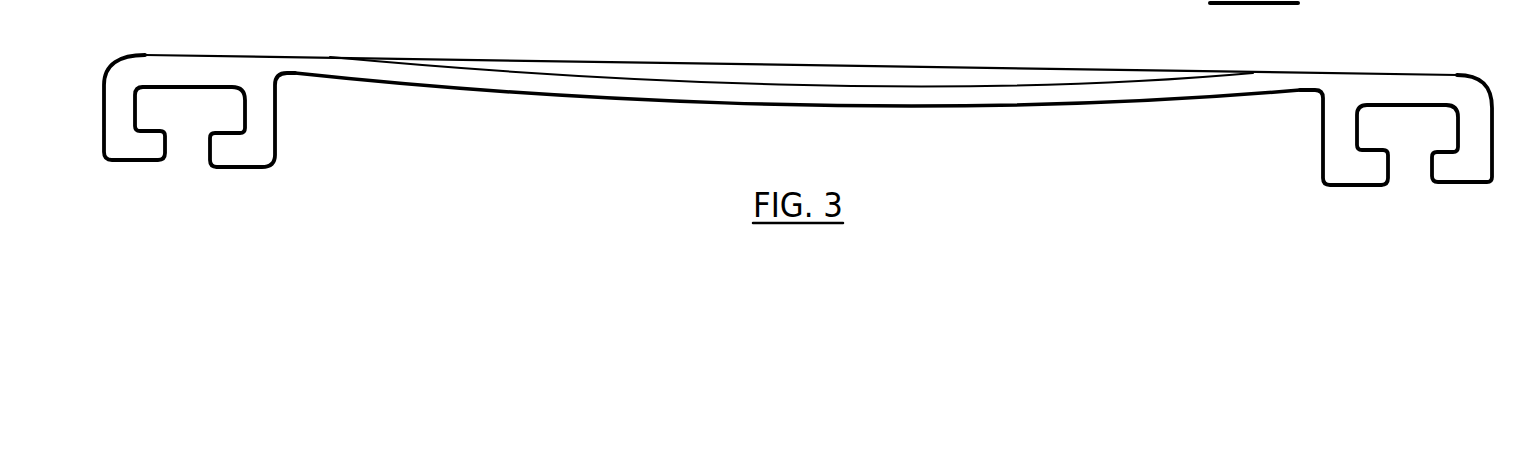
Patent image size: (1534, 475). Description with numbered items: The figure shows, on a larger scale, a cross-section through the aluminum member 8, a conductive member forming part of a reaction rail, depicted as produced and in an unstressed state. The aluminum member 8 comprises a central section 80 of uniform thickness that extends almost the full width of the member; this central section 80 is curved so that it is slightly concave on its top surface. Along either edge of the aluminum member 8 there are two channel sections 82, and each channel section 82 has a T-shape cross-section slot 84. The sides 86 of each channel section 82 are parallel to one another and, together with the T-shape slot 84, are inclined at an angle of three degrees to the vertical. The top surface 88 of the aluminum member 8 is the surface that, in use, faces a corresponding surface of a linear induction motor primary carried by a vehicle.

The aluminum member 8 is at (772, 93).
The central section 80 is at (682, 91).
The channel section 82 is at (132, 74).
The T-shape cross-section slot 84 is at (202, 113).
The sides 86 is at (280, 112).
The top surface 88 is at (570, 75).